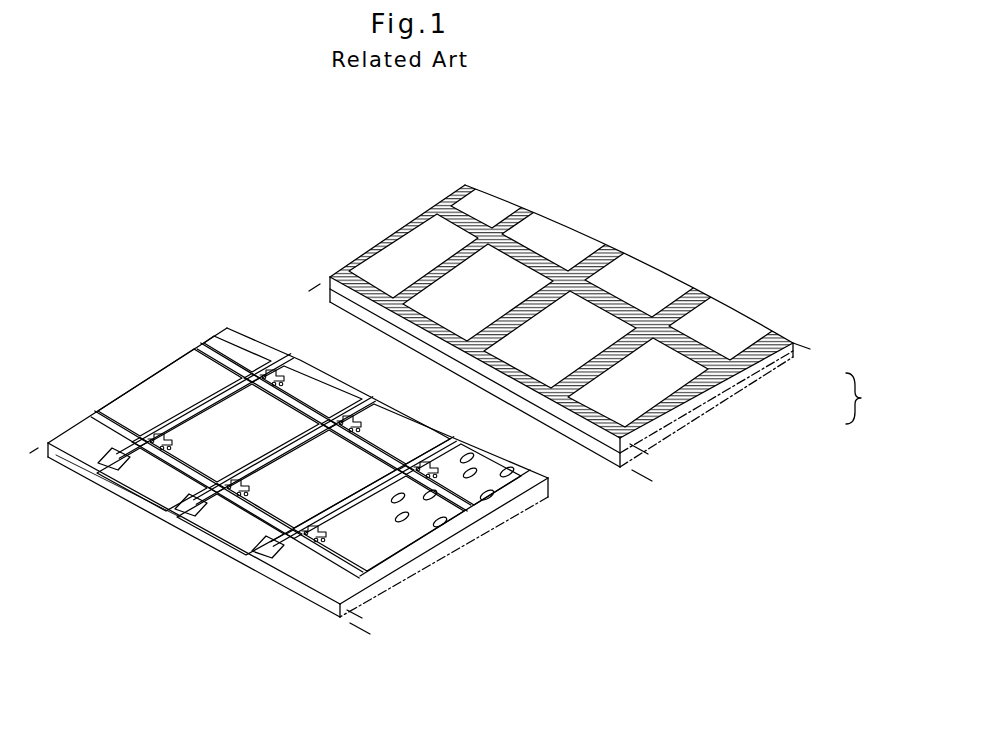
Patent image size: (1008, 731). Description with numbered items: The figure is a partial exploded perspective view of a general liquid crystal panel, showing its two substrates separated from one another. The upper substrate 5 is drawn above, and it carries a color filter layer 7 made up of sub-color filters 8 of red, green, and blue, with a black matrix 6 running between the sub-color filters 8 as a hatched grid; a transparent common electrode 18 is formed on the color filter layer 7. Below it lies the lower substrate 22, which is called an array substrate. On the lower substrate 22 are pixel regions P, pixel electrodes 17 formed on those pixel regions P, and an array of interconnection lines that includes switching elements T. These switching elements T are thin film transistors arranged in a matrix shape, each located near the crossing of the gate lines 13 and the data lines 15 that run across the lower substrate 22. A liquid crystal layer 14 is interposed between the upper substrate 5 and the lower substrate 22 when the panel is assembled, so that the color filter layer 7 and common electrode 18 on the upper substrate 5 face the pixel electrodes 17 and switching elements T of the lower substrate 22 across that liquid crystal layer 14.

The upper substrate 5 is at (591, 353).
The black matrix 6 is at (733, 378).
The color filter layer 7 is at (859, 398).
The sub-color filters 8 is at (733, 352).
The transparent common electrode 18 is at (653, 440).
The lower substrate 22 is at (350, 502).
The liquid crystal layer 14 is at (525, 482).
The gate lines 13 is at (363, 570).
The data lines 15 is at (280, 533).
The pixel electrodes 17 is at (445, 540).
The switching elements T is at (320, 543).
The pixel regions P is at (487, 497).